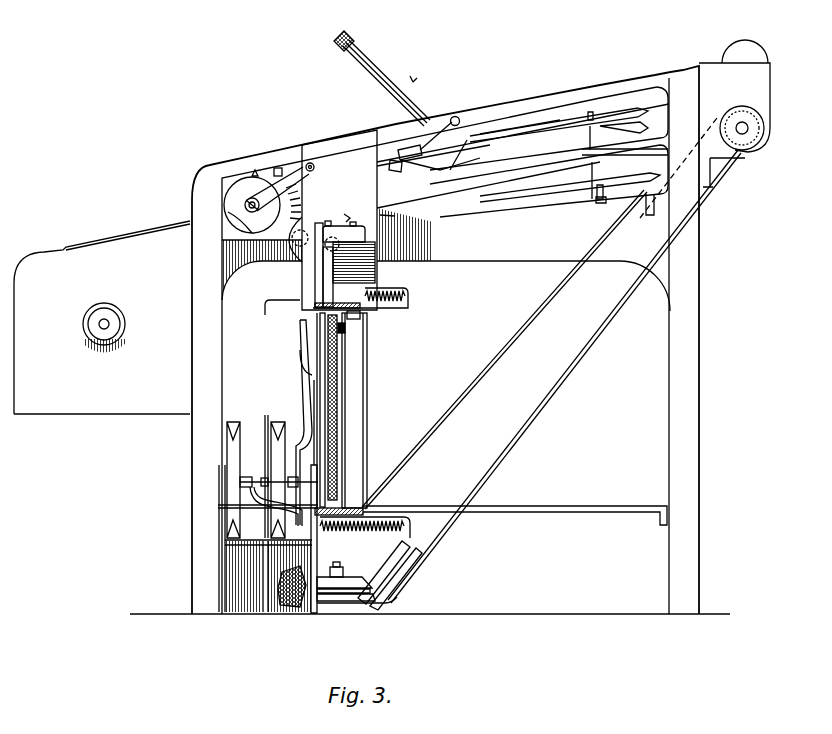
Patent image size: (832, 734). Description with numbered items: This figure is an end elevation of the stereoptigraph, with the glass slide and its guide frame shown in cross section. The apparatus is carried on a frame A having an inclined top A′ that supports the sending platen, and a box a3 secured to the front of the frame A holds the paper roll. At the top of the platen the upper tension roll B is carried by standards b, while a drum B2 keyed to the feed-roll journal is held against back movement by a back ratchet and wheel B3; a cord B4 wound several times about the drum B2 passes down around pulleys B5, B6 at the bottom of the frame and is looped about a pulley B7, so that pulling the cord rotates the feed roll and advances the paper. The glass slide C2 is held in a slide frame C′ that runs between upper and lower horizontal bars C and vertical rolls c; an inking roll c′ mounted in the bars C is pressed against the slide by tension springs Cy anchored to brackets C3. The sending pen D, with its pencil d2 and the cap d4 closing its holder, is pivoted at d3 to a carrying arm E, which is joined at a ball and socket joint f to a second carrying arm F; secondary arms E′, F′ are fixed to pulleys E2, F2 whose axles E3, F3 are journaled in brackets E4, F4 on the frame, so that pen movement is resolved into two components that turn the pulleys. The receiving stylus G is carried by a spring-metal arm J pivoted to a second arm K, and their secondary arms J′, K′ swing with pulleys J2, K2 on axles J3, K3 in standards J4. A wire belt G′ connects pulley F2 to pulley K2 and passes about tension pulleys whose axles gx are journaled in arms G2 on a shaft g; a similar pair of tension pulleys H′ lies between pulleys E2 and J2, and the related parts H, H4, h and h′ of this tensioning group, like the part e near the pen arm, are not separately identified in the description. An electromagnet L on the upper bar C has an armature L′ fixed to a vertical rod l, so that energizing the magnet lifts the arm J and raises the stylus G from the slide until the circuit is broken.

The frame A is at (714, 275).
The box a3 is at (62, 413).
The tension roll B is at (742, 60).
The standard b is at (757, 78).
The drum B2 is at (760, 120).
The back ratchet and wheel B3 is at (752, 140).
The cord B4 is at (533, 402).
The pulley B5 is at (412, 573).
The pulley B6 is at (283, 596).
The pulley B7 is at (350, 600).
The horizontal bar C is at (360, 314).
The slide frame C′ is at (343, 327).
The slide C2 is at (335, 372).
The spring bracket C3 is at (408, 308).
The tension spring Cy is at (408, 294).
The vertical roll c is at (358, 427).
The inking roll c′ is at (345, 395).
The sending pen D is at (413, 82).
The pencil d2 is at (466, 152).
The pivot d3 is at (456, 117).
The cap d4 is at (370, 73).
The carrying arm E is at (405, 150).
The secondary arm E′ is at (560, 160).
The rotary member E2 is at (569, 187).
The axle E3 is at (600, 190).
The bracket E4 is at (649, 214).
The pin e is at (398, 170).
The inclined top A′ is at (418, 172).
The second carrying arm F is at (520, 162).
The secondary arm F′ is at (600, 140).
The rotary member F2 is at (556, 120).
The axle F3 is at (597, 125).
The bracket F4 is at (645, 168).
The ball and socket joint f is at (419, 147).
The stylus G is at (241, 198).
The arm G2 is at (279, 168).
The wire belt G′ is at (497, 138).
The shaft g is at (311, 163).
The axle gx is at (249, 202).
The lever H is at (458, 198).
The tension pulley H′ is at (297, 236).
The plate pin H4 is at (352, 206).
The lever pin h is at (392, 218).
The lever arm h′ is at (230, 212).
The carrying arm J is at (310, 372).
The secondary carrying arm J′ is at (305, 410).
The rotary member J2 is at (302, 452).
The axle J3 is at (285, 448).
The standard J4 is at (312, 553).
The second carrying arm K is at (300, 386).
The secondary carrying arm K′ is at (218, 505).
The rotary member K2 is at (248, 500).
The axle K3 is at (238, 482).
The electromagnet L is at (376, 277).
The armature L′ is at (316, 272).
The vertical rod l is at (318, 348).